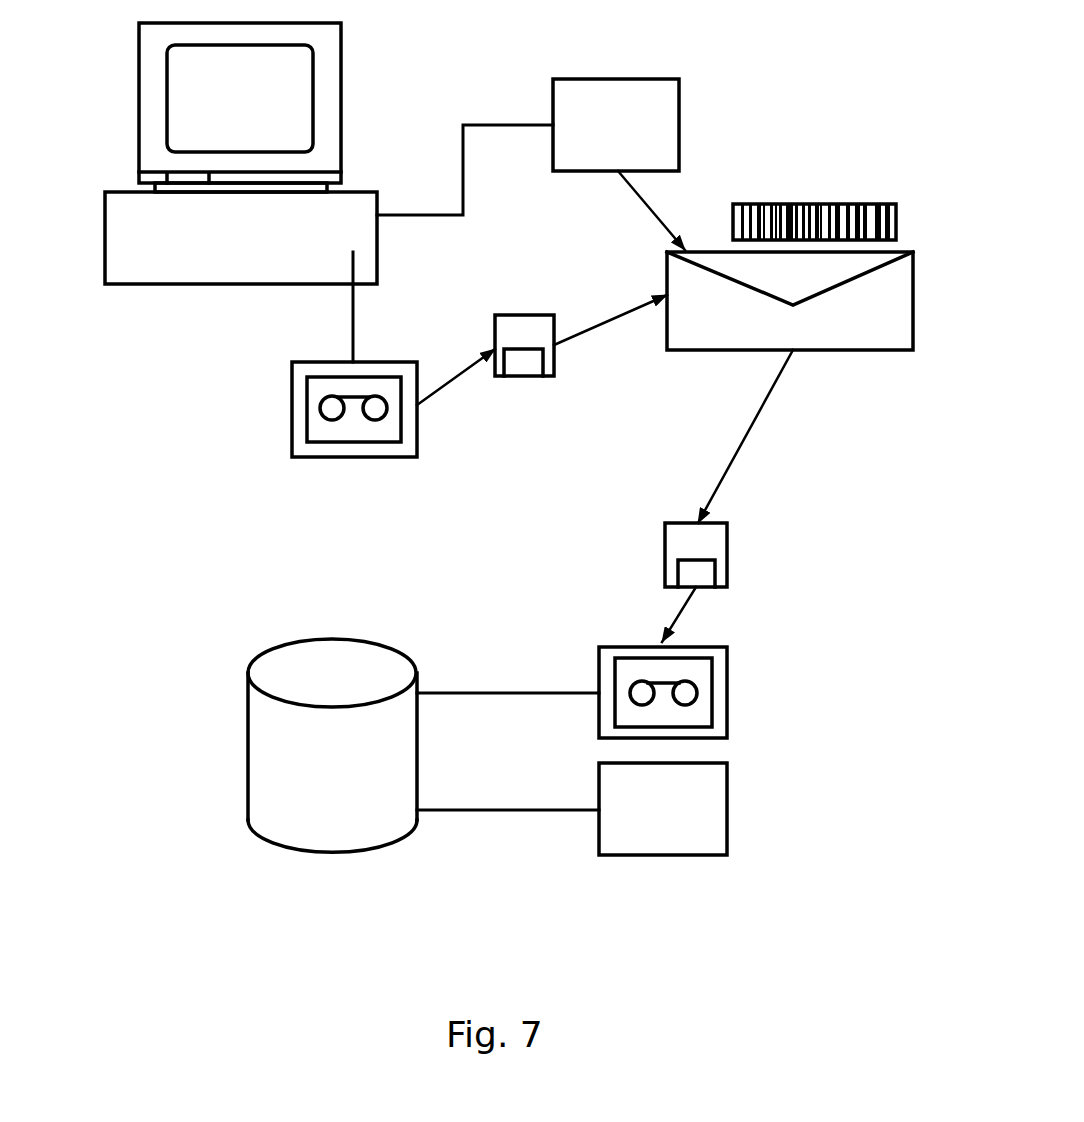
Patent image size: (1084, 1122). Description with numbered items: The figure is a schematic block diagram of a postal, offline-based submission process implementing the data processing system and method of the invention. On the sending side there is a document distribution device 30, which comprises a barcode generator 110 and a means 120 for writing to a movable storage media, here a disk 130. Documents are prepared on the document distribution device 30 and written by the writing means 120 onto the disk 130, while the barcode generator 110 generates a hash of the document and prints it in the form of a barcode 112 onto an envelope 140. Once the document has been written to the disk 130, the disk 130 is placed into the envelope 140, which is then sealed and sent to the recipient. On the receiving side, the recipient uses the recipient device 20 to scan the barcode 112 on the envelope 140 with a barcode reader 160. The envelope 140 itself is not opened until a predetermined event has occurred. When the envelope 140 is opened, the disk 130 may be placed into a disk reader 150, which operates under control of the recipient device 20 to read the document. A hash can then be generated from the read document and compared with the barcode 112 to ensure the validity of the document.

The recipient device 20 is at (248, 752).
The document distribution device 30 is at (170, 284).
The barcode generator 110 is at (679, 122).
The barcode 112 is at (853, 203).
The means for writing to a movable storage media 120 is at (355, 457).
The disk 130 is at (522, 376).
The envelope 140 is at (857, 350).
The disk reader 150 is at (727, 692).
The barcode reader 160 is at (727, 810).